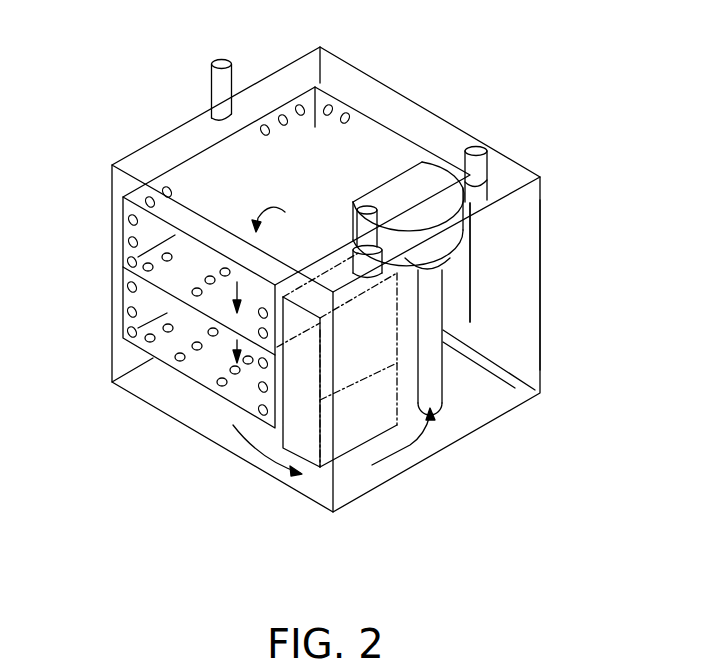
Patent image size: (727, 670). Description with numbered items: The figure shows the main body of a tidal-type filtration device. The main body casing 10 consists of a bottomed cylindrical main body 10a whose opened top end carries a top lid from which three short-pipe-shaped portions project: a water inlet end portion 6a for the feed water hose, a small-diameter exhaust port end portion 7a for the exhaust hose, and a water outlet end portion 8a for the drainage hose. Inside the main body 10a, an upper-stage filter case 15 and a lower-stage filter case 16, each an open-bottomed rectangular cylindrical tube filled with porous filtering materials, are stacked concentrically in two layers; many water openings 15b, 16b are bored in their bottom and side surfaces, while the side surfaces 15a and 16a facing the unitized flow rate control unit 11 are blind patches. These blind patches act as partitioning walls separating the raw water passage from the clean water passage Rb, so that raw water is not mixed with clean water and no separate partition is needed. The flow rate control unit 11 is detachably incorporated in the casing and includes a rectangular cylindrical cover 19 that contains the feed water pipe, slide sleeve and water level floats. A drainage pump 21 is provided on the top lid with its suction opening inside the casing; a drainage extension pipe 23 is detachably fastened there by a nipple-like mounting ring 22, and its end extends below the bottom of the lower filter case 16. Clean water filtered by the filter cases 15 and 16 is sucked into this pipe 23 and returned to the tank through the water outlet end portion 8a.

The main body casing 10 is at (546, 310).
The main body 10a is at (540, 342).
The exhaust port end portion 7a is at (214, 80).
The upper-stage filter case 15 is at (163, 160).
The side surface of upper filter case 15a is at (473, 232).
The upper tray holes 15b is at (323, 107).
The lower-stage filter case 16 is at (165, 372).
The side surface of lower filter case 16a is at (473, 357).
The lower tray holes 16b is at (197, 350).
The drainage pump 21 is at (427, 187).
The water inlet end portion 6a is at (378, 218).
The water outlet end portion 8a is at (483, 167).
The mounting ring 22 is at (448, 265).
The drainage extension pipe 23 is at (430, 310).
The flow rate control unit 11 is at (345, 455).
The cover 19 is at (307, 463).
The clean water passage Rb is at (418, 443).